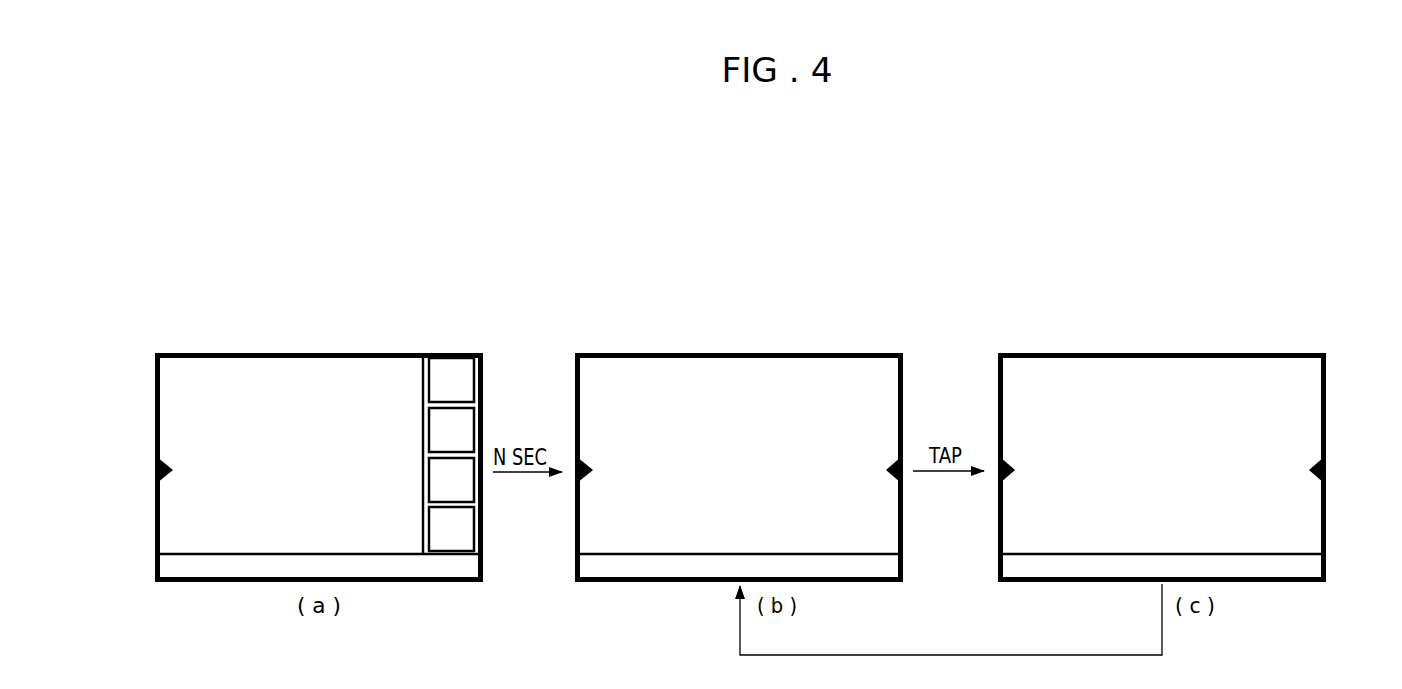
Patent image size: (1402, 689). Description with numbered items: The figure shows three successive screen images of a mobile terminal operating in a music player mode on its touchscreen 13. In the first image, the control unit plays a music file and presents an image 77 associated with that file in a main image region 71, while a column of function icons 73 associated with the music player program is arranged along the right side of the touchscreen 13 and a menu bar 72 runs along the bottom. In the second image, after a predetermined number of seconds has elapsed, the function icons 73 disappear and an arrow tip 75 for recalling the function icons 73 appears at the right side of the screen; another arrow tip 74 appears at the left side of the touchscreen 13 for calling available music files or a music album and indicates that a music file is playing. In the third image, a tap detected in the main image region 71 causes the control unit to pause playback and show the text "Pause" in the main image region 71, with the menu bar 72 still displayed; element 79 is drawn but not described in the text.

The touchscreen 13 is at (487, 345).
The main image region 71 is at (200, 410).
The menu bar 72 is at (424, 574).
The function icons 73 is at (445, 365).
The arrow tip 74 is at (172, 450).
The arrow tip 75 is at (898, 462).
The image 77 is at (169, 518).
The pause region 79 is at (1011, 518).